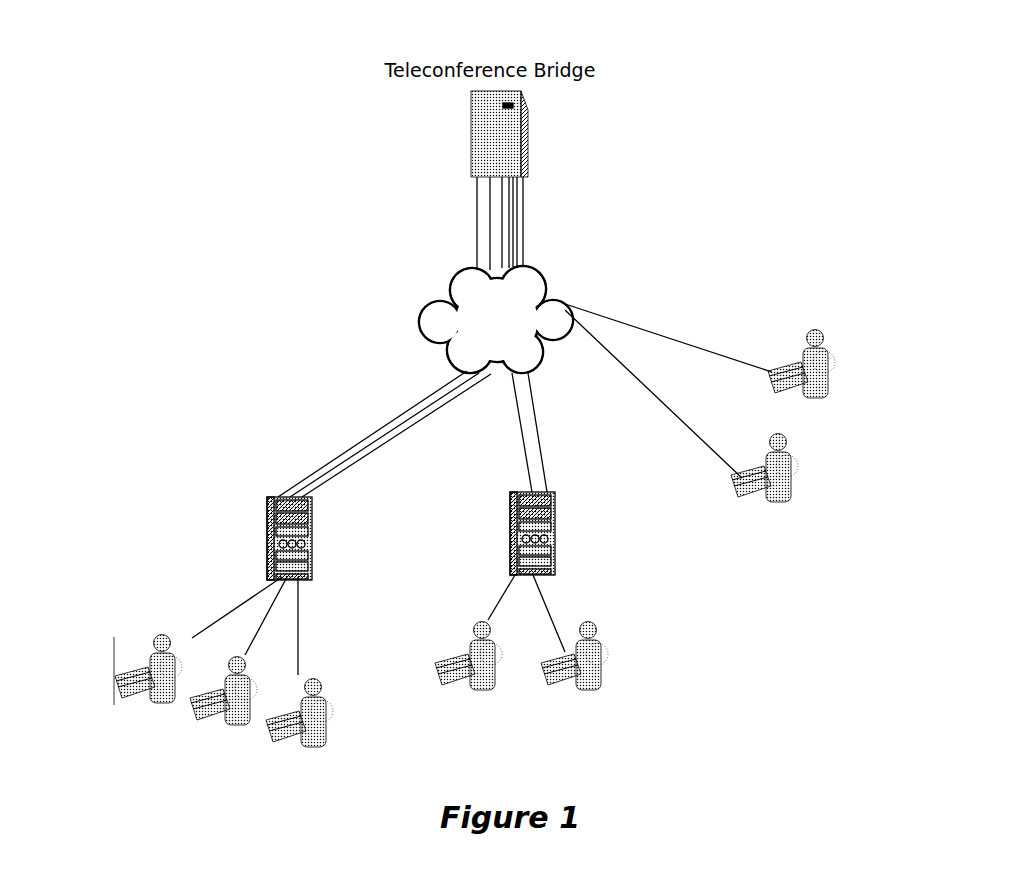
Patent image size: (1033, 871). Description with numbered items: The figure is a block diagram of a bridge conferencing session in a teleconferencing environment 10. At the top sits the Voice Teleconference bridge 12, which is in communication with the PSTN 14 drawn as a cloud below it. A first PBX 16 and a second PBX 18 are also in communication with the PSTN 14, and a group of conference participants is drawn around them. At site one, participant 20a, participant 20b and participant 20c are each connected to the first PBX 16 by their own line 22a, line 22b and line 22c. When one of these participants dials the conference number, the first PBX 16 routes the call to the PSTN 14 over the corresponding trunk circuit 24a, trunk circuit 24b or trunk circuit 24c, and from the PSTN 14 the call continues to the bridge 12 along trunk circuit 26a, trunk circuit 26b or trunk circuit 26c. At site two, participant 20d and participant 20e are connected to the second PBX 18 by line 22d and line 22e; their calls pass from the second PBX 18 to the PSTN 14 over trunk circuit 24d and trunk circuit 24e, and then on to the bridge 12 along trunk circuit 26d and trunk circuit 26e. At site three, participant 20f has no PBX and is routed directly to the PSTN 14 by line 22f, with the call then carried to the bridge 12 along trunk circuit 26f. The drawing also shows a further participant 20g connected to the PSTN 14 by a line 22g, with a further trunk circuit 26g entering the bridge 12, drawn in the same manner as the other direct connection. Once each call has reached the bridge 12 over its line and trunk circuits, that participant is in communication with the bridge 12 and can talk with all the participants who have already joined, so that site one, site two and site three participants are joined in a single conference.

The teleconferencing environment 10 is at (288, 32).
The Voice Teleconference bridge 12 is at (543, 134).
The PSTN 14 is at (529, 316).
The first PBX 16 is at (301, 532).
The second PBX 18 is at (545, 526).
The site 1 participant 20a is at (107, 666).
The site 1 participant 20b is at (270, 717).
The site 1 participant 20c is at (344, 713).
The site 2 participant 20d is at (563, 672).
The site 2 participant 20e is at (620, 656).
The site 3 participant 20f is at (850, 352).
The user 20g is at (817, 454).
The line 22a is at (209, 593).
The line 22b is at (216, 616).
The line 22c is at (349, 626).
The line 22d is at (449, 584).
The line 22e is at (592, 613).
The line 22f is at (667, 329).
The user connection line 22g is at (685, 394).
The trunk circuit 24a is at (344, 434).
The trunk circuit 24b is at (362, 435).
The trunk circuit 24c is at (389, 435).
The trunk circuit 24d is at (573, 432).
The trunk circuit 24e is at (585, 432).
The trunk circuit 26a is at (423, 217).
The trunk circuit 26b is at (428, 223).
The trunk circuit 26c is at (435, 222).
The trunk circuit 26d is at (562, 217).
The trunk circuit 26e is at (566, 222).
The trunk circuit 26f is at (568, 222).
The bridge line 26g is at (577, 222).